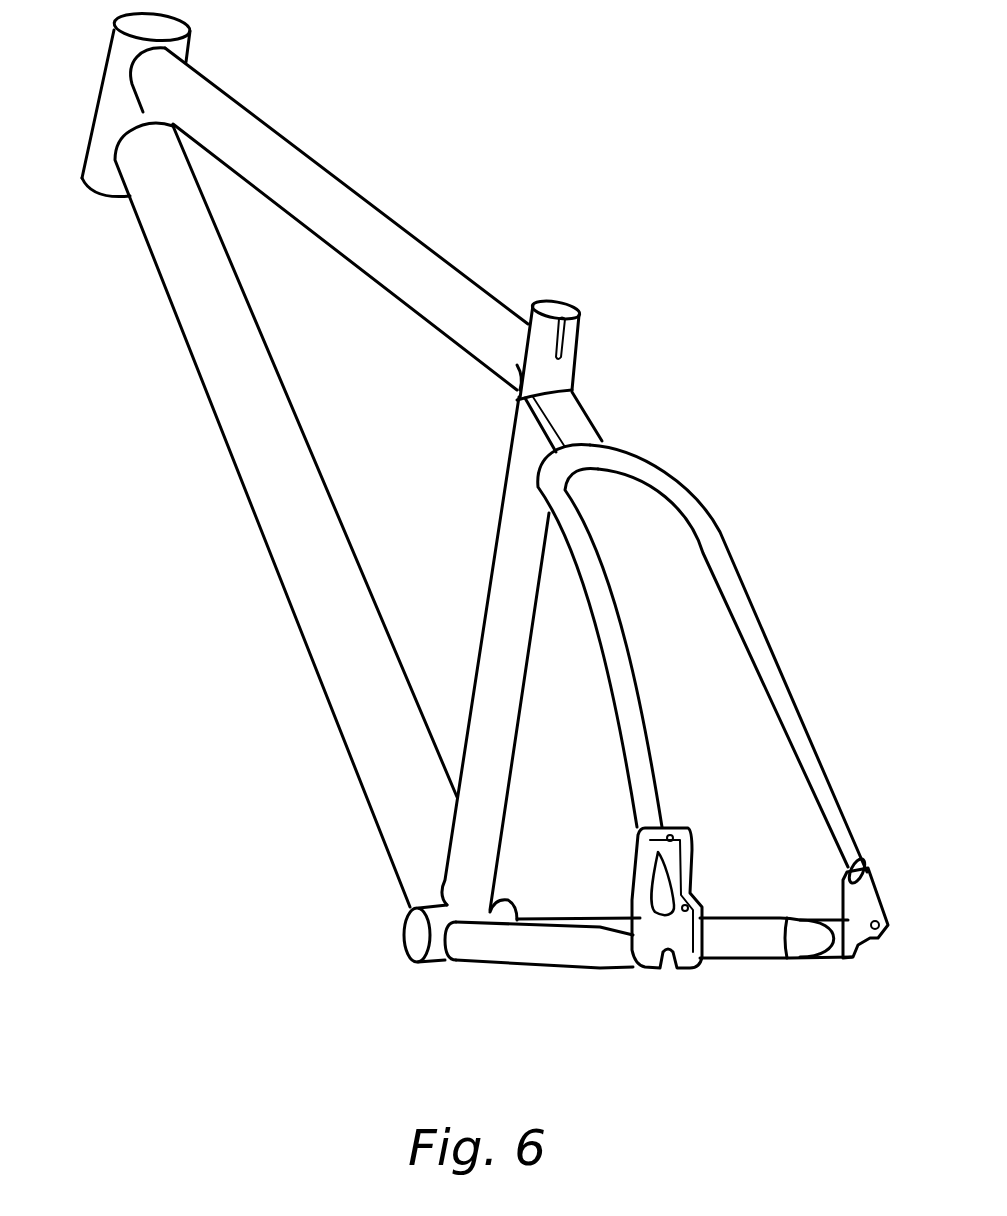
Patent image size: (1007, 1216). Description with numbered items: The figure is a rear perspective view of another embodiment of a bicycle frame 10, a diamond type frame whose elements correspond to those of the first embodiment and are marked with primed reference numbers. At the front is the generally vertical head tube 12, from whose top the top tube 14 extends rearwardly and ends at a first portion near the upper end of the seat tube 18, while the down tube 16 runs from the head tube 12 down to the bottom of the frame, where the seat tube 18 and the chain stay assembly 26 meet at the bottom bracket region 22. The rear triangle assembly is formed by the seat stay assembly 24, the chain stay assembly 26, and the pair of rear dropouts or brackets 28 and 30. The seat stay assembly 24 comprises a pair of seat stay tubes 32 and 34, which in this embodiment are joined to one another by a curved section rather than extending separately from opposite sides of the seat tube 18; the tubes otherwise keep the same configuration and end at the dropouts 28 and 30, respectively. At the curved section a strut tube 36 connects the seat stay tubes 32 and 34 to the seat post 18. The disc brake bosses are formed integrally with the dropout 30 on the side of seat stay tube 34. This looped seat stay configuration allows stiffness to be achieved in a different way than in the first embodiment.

The bicycle frame 10 is at (692, 190).
The head tube 12 is at (100, 70).
The top tube 14 is at (422, 242).
The down tube 16 is at (293, 615).
The seat tube 18 is at (497, 537).
The bottom bracket shell 22 is at (437, 965).
The seat stay assembly 24 is at (703, 606).
The chain stay assembly 26 is at (570, 972).
The rear dropout 28 is at (867, 945).
The rear dropout 30 is at (677, 975).
The seat stay tube 32 is at (729, 665).
The seat stay tube 34 is at (620, 618).
The strut tube 36 is at (587, 415).